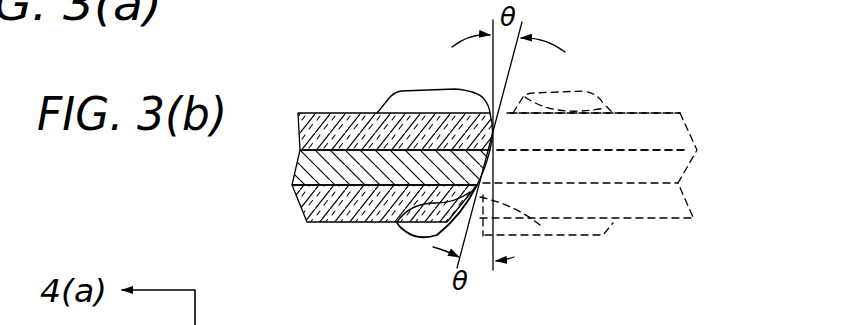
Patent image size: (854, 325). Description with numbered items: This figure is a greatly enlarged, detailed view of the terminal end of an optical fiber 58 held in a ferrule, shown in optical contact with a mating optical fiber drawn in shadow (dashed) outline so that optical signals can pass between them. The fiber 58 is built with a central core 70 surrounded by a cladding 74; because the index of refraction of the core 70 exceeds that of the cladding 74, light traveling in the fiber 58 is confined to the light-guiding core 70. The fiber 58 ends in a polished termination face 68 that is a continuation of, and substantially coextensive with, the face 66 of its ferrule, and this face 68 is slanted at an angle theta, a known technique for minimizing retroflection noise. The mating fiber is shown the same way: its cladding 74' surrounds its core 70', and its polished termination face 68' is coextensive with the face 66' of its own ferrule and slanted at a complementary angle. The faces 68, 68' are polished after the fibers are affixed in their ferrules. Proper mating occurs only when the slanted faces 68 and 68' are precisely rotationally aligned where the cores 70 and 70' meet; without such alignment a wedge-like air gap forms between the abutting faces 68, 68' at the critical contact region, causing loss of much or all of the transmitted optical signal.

The optical fiber 58 is at (355, 165).
The cladding 74 is at (373, 103).
The central core 70 is at (353, 176).
The ferrule face 66 is at (431, 66).
The polished termination face 68 is at (405, 247).
The ferrule face 66' is at (577, 64).
The cladding 74' is at (595, 94).
The central core 70' is at (592, 237).
The polished termination face 68' is at (528, 249).